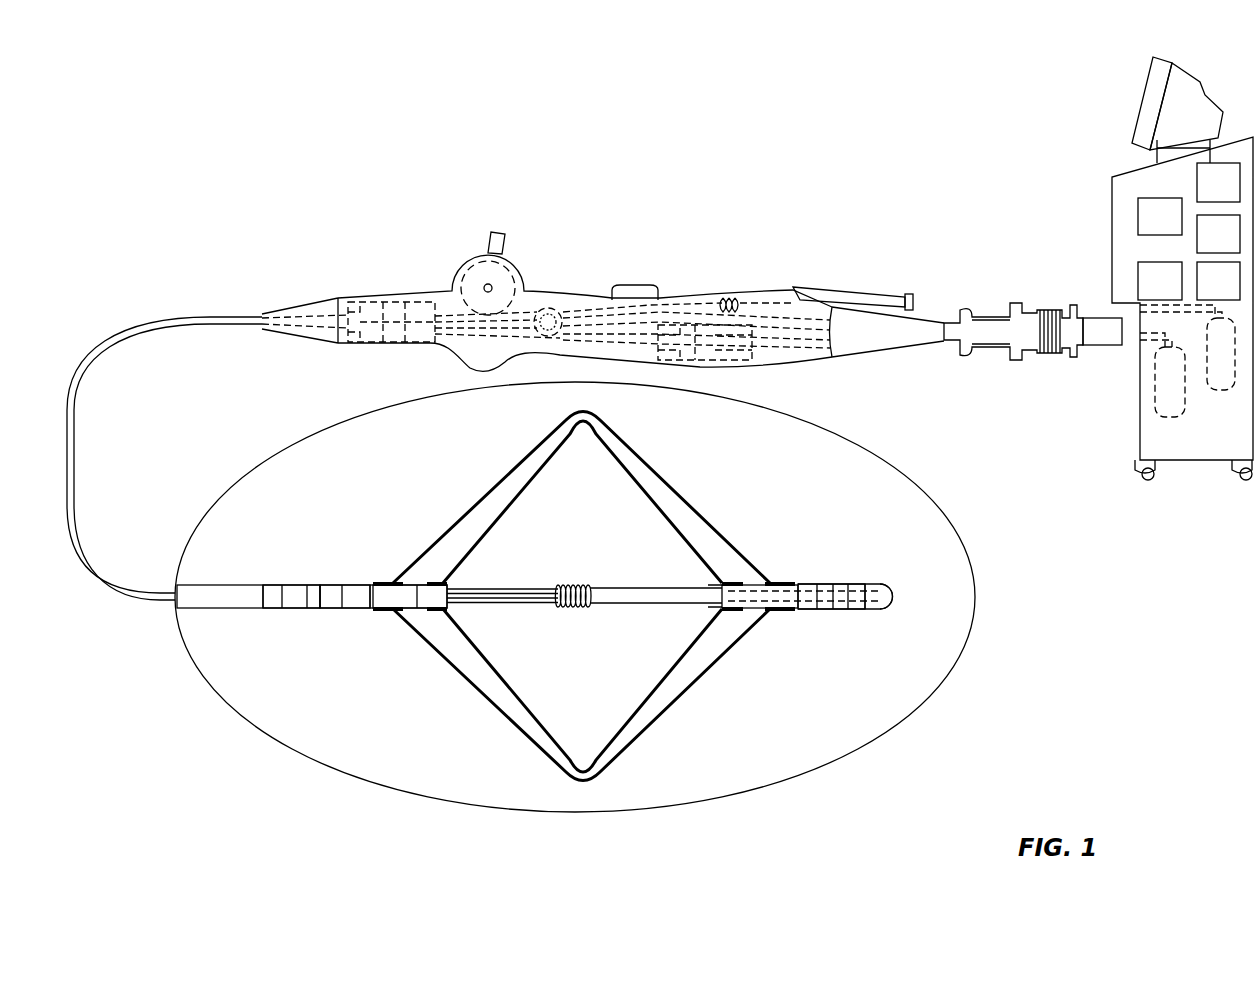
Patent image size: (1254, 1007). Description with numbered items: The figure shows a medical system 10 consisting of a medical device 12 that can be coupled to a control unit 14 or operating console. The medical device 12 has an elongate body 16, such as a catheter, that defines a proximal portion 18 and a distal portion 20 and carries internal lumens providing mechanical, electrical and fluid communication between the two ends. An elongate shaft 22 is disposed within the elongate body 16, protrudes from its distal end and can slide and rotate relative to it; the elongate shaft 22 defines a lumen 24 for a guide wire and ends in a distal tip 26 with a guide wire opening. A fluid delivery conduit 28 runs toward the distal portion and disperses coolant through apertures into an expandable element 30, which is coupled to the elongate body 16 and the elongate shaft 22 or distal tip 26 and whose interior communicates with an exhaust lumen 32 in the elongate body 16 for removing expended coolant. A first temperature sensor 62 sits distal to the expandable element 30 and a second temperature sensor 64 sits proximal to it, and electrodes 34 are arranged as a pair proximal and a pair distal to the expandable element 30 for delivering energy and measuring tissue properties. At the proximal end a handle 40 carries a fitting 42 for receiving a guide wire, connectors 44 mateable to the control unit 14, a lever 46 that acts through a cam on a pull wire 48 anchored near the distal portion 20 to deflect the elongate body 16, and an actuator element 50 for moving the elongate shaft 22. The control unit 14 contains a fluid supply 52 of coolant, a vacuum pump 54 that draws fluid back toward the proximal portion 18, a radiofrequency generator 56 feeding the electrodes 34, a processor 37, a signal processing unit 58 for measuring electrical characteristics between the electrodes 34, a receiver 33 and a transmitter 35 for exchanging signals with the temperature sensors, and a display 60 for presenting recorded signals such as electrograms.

The medical system 10 is at (1062, 552).
The medical device 12 is at (304, 163).
The control unit 14 is at (1118, 178).
The elongate body 16 is at (122, 348).
The proximal portion 18 is at (266, 312).
The distal portion 20 is at (758, 506).
The elongate shaft 22 is at (655, 610).
The lumen 24 is at (895, 597).
The distal tip 26 is at (835, 583).
The fluid delivery conduit 28 is at (565, 583).
The expandable element 30 is at (668, 478).
The exhaust lumen 32 is at (463, 608).
The receiver 33 is at (1218, 234).
The electrodes 34 is at (313, 583).
The transmitter 35 is at (1218, 281).
The processor 37 is at (1160, 216).
The handle 40 is at (462, 352).
The fitting 42 is at (856, 296).
The connectors 44 is at (1090, 318).
The lever 46 is at (500, 233).
The pull wire 48 is at (470, 266).
The actuator element 50 is at (628, 285).
The fluid supply 52 is at (1170, 418).
The vacuum pump 54 is at (1218, 392).
The radiofrequency generator 56 is at (1218, 182).
The signal processing unit 58 is at (1160, 281).
The display 60 is at (1177, 110).
The first temperature sensor 62 is at (808, 583).
The second temperature sensor 64 is at (358, 583).